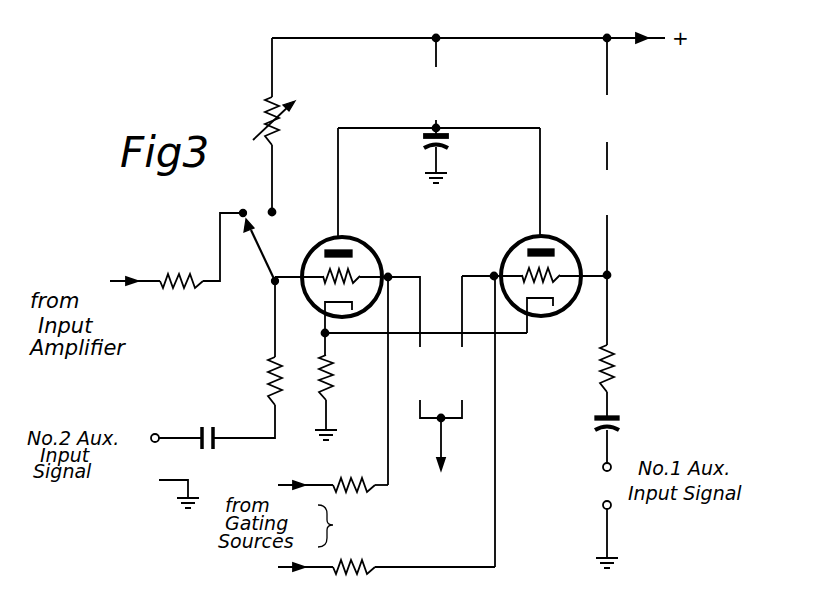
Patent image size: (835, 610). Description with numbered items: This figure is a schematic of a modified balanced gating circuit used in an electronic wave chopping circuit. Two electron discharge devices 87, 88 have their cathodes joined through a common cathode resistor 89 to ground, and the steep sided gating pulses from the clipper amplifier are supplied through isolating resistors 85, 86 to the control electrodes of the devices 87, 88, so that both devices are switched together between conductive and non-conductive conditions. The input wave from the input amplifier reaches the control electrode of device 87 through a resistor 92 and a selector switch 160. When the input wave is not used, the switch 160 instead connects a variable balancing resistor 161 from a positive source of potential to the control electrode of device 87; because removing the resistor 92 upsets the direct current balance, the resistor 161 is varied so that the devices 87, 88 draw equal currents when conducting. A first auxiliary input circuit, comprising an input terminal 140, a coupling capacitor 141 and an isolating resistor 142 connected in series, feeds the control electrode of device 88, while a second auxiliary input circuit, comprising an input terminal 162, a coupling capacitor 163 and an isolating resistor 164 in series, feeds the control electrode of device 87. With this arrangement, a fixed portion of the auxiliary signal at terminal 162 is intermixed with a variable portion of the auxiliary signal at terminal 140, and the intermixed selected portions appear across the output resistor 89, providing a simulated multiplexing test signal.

The variable balancing resistor 161 is at (266, 103).
The resistor 92 is at (171, 269).
The selector switch 160 is at (264, 257).
The electron discharge device 87 is at (360, 245).
The electron discharge device 88 is at (526, 244).
The isolating resistor 164 is at (270, 370).
The common cathode resistor 89 is at (332, 377).
The second auxiliary input terminal 162 is at (157, 433).
The coupling capacitor 163 is at (211, 425).
The isolating resistor 86 is at (342, 481).
The isolating resistor 85 is at (360, 565).
The isolating resistor 142 is at (611, 352).
The coupling capacitor 141 is at (617, 412).
The first auxiliary input terminal 140 is at (611, 462).